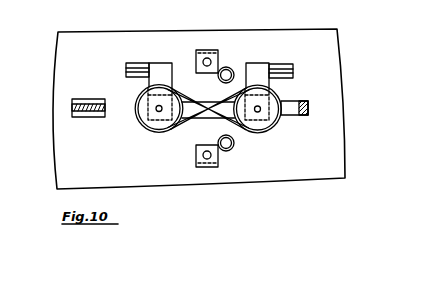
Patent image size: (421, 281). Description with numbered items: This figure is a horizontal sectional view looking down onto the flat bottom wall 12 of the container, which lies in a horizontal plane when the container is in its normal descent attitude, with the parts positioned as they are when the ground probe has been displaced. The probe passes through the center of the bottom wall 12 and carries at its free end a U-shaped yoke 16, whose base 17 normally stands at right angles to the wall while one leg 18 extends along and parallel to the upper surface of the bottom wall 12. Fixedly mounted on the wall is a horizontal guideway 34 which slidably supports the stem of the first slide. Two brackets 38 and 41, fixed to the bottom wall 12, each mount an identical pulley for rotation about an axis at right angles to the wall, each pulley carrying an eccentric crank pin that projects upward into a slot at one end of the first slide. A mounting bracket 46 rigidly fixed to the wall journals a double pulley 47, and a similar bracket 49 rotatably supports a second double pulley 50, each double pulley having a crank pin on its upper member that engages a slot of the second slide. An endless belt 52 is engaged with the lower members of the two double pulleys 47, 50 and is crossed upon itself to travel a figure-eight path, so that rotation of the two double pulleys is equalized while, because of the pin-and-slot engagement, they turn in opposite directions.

The bottom wall 12 is at (336, 60).
The U-shaped yoke 16 is at (309, 104).
The base 17 is at (308, 113).
The leg 18 is at (289, 116).
The horizontal guideway 34 is at (87, 99).
The bracket 38 is at (218, 50).
The bracket 41 is at (217, 159).
The mounting bracket 46 is at (139, 63).
The double pulley 47 is at (150, 128).
The bracket 49 is at (273, 64).
The double pulley 50 is at (276, 98).
The endless belt 52 is at (185, 121).